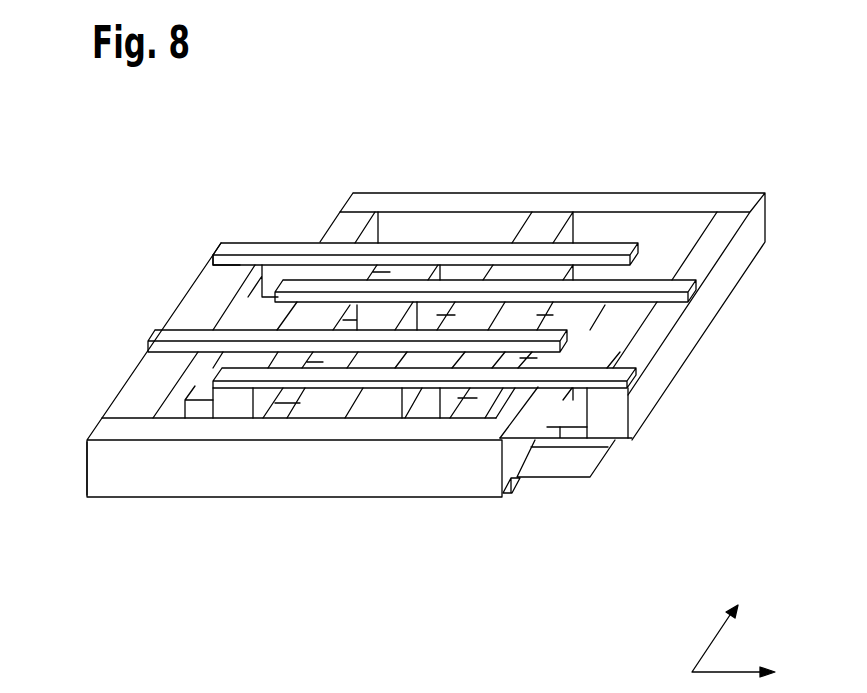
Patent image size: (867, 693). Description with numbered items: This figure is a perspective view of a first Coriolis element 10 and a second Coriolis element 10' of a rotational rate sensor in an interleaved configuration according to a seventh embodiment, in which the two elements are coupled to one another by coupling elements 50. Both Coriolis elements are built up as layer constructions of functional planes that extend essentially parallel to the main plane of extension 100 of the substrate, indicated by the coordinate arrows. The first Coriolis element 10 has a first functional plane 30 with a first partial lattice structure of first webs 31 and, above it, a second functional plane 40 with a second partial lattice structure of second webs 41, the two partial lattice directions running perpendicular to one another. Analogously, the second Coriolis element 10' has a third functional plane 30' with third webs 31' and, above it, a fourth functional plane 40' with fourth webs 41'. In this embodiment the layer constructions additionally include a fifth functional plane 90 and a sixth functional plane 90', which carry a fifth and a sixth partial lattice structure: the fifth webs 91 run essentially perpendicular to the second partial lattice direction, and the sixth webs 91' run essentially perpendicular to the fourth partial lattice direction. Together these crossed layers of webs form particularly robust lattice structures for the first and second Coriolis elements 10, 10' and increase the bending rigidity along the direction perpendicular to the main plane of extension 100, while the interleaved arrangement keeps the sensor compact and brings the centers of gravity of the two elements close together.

The first Coriolis element 10 is at (649, 268).
The second Coriolis element 10' is at (177, 400).
The first functional plane 30 is at (607, 457).
The third functional plane 30' is at (484, 523).
The first webs 31 is at (548, 497).
The third webs 31' is at (124, 388).
The second functional plane 40 is at (552, 316).
The fourth functional plane 40' is at (294, 493).
The second webs 41 is at (627, 463).
The fourth webs 41' is at (47, 466).
The coupling elements 50 is at (575, 480).
The fifth functional plane 90 is at (487, 371).
The sixth functional plane 90' is at (425, 200).
The fifth webs 91 is at (536, 304).
The sixth webs 91' is at (188, 242).
The main plane of extension 100 is at (733, 641).